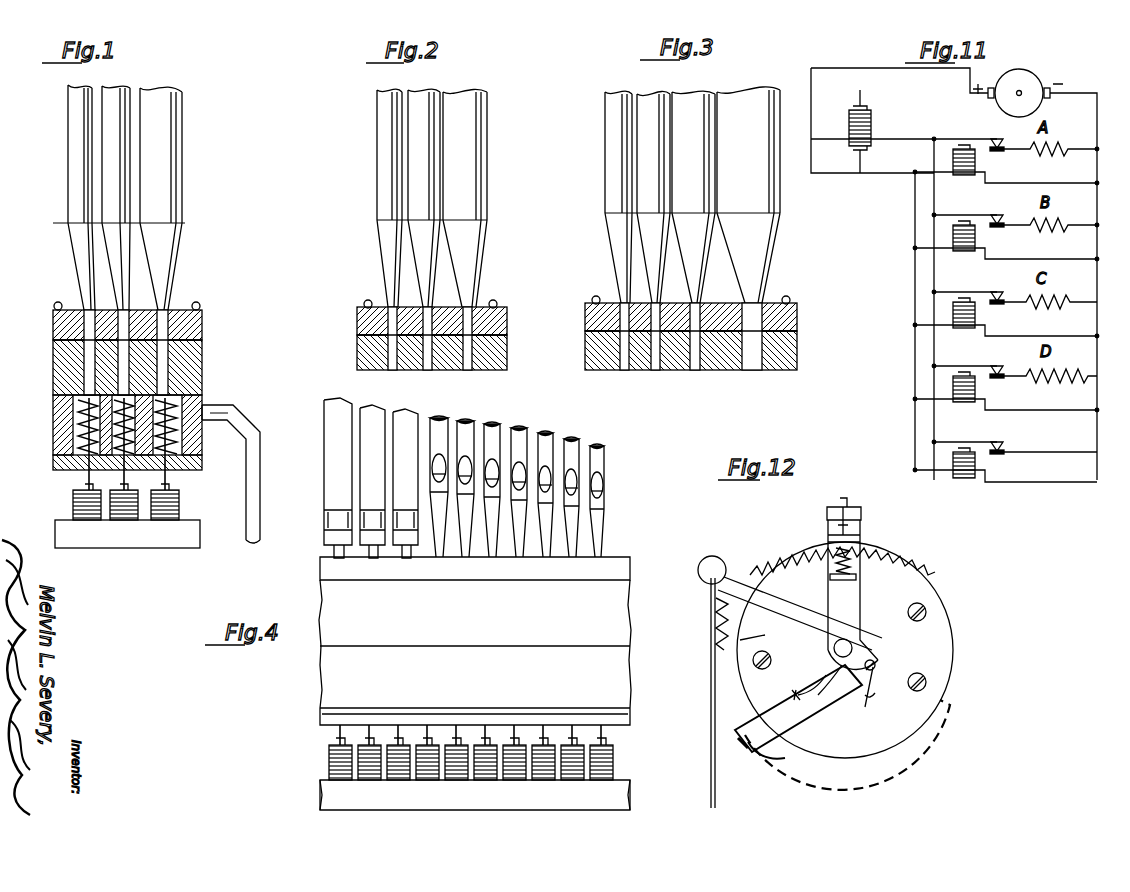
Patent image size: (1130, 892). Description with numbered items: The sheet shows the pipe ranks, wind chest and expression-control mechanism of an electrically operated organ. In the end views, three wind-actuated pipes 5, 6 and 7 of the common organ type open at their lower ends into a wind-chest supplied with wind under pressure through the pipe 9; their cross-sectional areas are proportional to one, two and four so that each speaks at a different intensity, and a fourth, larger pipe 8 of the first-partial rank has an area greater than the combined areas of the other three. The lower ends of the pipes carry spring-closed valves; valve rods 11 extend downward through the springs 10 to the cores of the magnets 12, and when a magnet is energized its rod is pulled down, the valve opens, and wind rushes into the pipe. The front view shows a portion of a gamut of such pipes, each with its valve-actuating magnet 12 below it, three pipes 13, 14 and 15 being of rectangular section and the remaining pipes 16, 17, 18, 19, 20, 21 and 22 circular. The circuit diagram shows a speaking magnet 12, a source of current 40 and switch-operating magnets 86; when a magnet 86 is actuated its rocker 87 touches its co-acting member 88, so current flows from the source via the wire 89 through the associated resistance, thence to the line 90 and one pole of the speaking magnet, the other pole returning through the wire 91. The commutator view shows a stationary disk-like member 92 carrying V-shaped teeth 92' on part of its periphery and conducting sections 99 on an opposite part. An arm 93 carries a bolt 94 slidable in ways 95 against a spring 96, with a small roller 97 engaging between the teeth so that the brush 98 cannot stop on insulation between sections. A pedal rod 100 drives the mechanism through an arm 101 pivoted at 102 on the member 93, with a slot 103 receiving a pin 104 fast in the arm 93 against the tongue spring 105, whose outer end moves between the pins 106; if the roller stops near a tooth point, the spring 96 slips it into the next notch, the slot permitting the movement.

In FIG. 1, the wind-actuated pipe 5 is at (168, 198).
In FIG. 2, the wind-actuated pipe 5 is at (470, 186).
In FIG. 3, the wind-actuated pipe 5 is at (700, 130).
In FIG. 1, the wind-actuated pipe 6 is at (118, 172).
In FIG. 2, the wind-actuated pipe 6 is at (420, 158).
In FIG. 3, the wind-actuated pipe 6 is at (650, 181).
In FIG. 1, the wind-actuated pipe 7 is at (70, 126).
In FIG. 2, the wind-actuated pipe 7 is at (392, 194).
In FIG. 3, the wind-actuated pipe 7 is at (608, 136).
In FIG. 3, the pipe 8 is at (775, 205).
In FIG. 1, the pipe 9 is at (234, 422).
In FIG. 1, the spring 10 is at (74, 406).
In FIG. 1, the valve rod 11 is at (68, 438).
In FIG. 1, the magnet 12 is at (72, 500).
In FIG. 4, the magnet 12 is at (330, 764).
In FIG. 11, the magnet 12 is at (872, 120).
In FIG. 4, the pipe of rectangular section 13 is at (332, 400).
In FIG. 4, the pipe of rectangular section 14 is at (370, 410).
In FIG. 4, the pipe of rectangular section 15 is at (403, 414).
In FIG. 4, the pipe of circular section 16 is at (436, 418).
In FIG. 4, the pipe of circular section 17 is at (465, 421).
In FIG. 4, the pipe of circular section 18 is at (493, 424).
In FIG. 4, the pipe of circular section 19 is at (519, 428).
In FIG. 4, the pipe of circular section 20 is at (547, 433).
In FIG. 4, the pipe of circular section 21 is at (574, 439).
In FIG. 4, the pipe of circular section 22 is at (603, 448).
In FIG. 11, the source of current 40 is at (1037, 72).
In FIG. 11, the switch-operating magnet 86 is at (965, 176).
In FIG. 11, the rocker 87 is at (989, 138).
In FIG. 11, the co-acting member 88 is at (1000, 152).
In FIG. 11, the wire 89 is at (1097, 274).
In FIG. 11, the line 90 is at (934, 278).
In FIG. 11, the wire 91 is at (847, 68).
In FIG. 12, the stationary disk-like member 92 is at (867, 650).
In FIG. 12, the V-shaped teeth 92' is at (749, 557).
In FIG. 12, the arm 93 is at (861, 522).
In FIG. 12, the bolt 94 is at (836, 556).
In FIG. 12, the ways 95 is at (848, 500).
In FIG. 12, the spring 96 is at (830, 580).
In FIG. 12, the roller 97 is at (838, 530).
In FIG. 12, the brush 98 is at (750, 755).
In FIG. 12, the conducting section 99 is at (918, 742).
In FIG. 12, the rod 100 is at (711, 724).
In FIG. 12, the arm 101 is at (776, 616).
In FIG. 12, the pivot 102 is at (854, 648).
In FIG. 12, the slot 103 is at (878, 672).
In FIG. 12, the pin 104 is at (876, 675).
In FIG. 12, the tongue spring 105 is at (812, 700).
In FIG. 12, the pins 106 is at (792, 702).